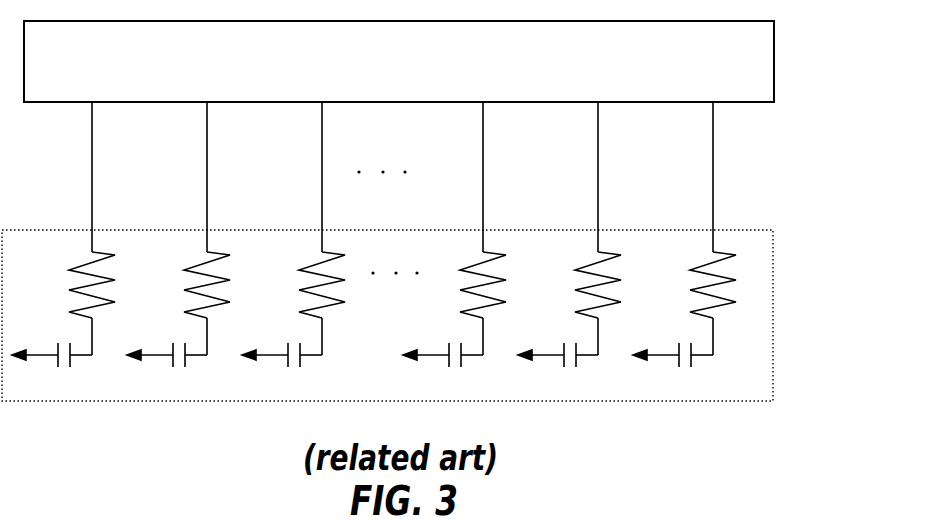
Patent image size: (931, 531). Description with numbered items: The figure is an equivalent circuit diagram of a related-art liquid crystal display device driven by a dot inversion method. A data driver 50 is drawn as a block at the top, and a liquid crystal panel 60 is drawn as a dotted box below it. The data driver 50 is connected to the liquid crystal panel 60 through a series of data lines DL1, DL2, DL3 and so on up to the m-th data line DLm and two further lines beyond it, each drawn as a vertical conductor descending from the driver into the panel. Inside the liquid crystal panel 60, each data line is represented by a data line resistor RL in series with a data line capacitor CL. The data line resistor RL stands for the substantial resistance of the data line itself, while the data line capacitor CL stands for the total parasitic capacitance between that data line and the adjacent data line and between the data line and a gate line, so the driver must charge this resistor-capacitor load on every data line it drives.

The data driver 50 is at (774, 64).
The liquid crystal panel 60 is at (773, 367).
The data line DL1 is at (67, 177).
The data line DL2 is at (181, 177).
The data line DL3 is at (297, 177).
The data line DLm is at (456, 177).
The data line resistor RL is at (388, 303).
The data line capacitor CL is at (362, 371).